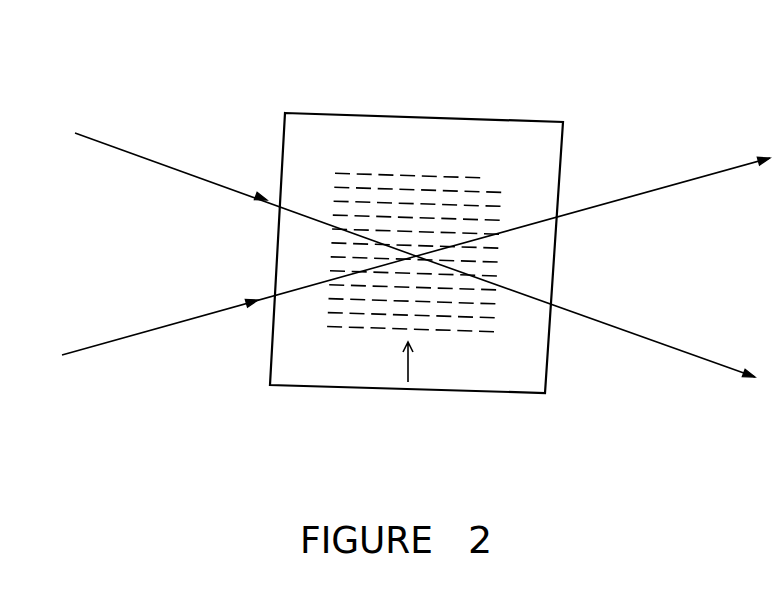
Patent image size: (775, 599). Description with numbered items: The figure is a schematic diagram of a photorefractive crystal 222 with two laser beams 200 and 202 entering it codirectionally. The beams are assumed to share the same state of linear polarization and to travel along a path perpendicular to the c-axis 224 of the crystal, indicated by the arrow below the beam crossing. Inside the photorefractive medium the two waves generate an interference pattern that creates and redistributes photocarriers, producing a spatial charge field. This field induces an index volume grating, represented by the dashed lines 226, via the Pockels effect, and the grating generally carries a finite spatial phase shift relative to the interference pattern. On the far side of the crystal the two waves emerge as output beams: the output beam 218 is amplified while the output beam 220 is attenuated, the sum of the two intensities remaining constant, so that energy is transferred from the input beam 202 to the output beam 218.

The beam 200 is at (153, 162).
The input beam 202 is at (155, 325).
The output beam 218 is at (673, 348).
The output beam 220 is at (675, 182).
The photorefractive crystal 222 is at (323, 113).
The c-axis 224 is at (403, 370).
The dashed lines 226 is at (332, 260).